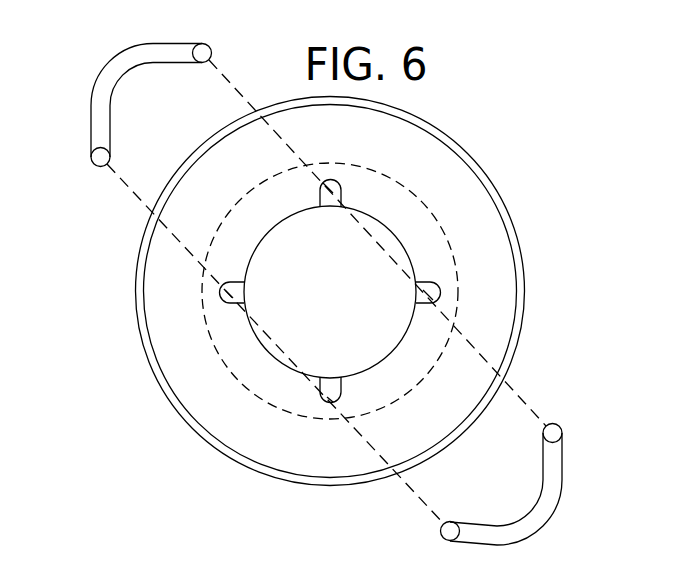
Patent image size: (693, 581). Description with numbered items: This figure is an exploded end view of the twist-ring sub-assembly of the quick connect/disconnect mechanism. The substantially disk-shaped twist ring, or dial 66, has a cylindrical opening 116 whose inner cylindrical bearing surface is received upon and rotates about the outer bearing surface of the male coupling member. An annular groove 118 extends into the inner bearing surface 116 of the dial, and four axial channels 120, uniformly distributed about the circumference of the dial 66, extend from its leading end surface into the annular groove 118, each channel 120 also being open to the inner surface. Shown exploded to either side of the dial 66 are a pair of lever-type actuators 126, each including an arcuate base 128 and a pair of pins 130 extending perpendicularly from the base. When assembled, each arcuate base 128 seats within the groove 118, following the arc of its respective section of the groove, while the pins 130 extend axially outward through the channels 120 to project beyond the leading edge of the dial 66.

The dial 66 is at (222, 418).
The cylindrical opening 116 is at (380, 222).
The annular groove 118 is at (455, 250).
The axial channels 120 is at (341, 188).
The lever-type actuators 126 is at (344, 308).
The arcuate base 128 is at (103, 90).
The pins 130 is at (208, 52).